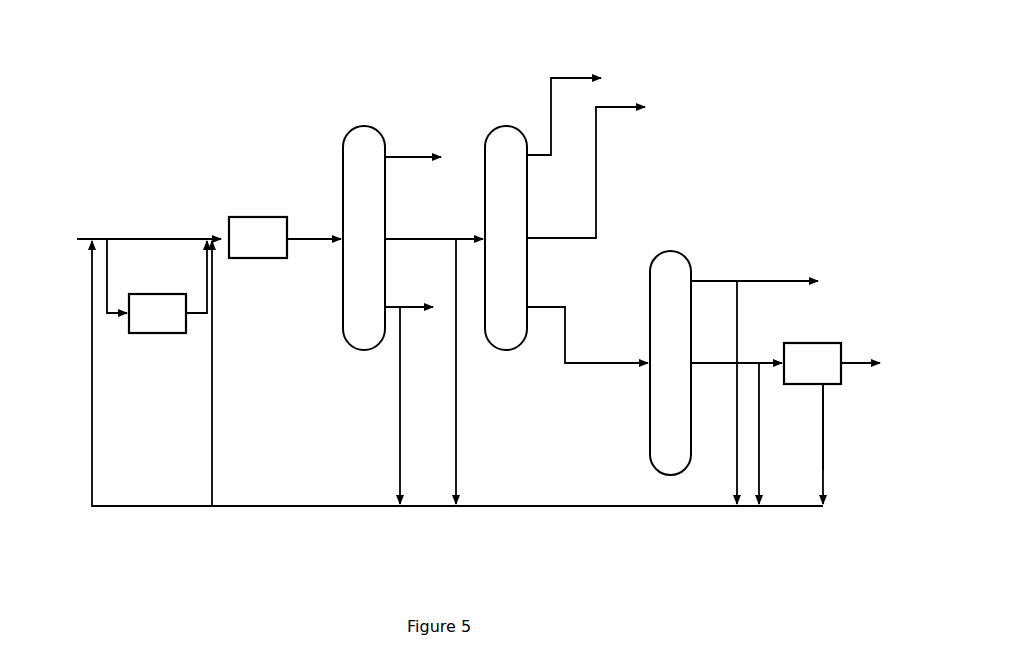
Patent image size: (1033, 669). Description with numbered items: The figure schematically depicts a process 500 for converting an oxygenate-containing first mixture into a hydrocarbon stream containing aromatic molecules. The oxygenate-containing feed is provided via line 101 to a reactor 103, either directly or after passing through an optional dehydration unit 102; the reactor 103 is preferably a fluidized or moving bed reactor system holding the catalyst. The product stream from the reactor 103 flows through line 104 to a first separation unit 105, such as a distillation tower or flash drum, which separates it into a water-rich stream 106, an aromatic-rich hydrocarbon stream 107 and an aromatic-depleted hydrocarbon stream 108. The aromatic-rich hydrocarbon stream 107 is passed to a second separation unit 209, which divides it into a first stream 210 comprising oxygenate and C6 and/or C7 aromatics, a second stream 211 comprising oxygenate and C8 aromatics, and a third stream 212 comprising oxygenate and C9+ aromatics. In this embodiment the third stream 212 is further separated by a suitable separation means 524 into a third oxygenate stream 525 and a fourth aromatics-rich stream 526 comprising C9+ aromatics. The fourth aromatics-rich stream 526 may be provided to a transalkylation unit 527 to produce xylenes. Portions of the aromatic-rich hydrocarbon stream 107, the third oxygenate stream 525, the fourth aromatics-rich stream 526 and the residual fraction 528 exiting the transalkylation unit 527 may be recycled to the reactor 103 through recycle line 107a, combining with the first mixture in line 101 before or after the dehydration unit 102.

The process 500 is at (120, 73).
The line 101 is at (143, 235).
The dehydration unit 102 is at (157, 286).
The reactor 103 is at (258, 237).
The line 104 is at (318, 235).
The first separation unit 105 is at (364, 238).
The water-rich stream 106 is at (416, 153).
The aromatic-rich hydrocarbon stream 107 is at (414, 237).
The recycle line 107a is at (620, 502).
The aromatic-depleted hydrocarbon stream 108 is at (420, 303).
The second separation unit 209 is at (506, 238).
The first stream 210 is at (566, 75).
The second stream 211 is at (543, 234).
The third stream 212 is at (546, 303).
The separation means 524 is at (670, 363).
The third oxygenate stream 525 is at (720, 278).
The fourth aromatics-rich stream 526 is at (714, 368).
The transalkylation unit 527 is at (832, 363).
The residual fraction 528 is at (821, 415).